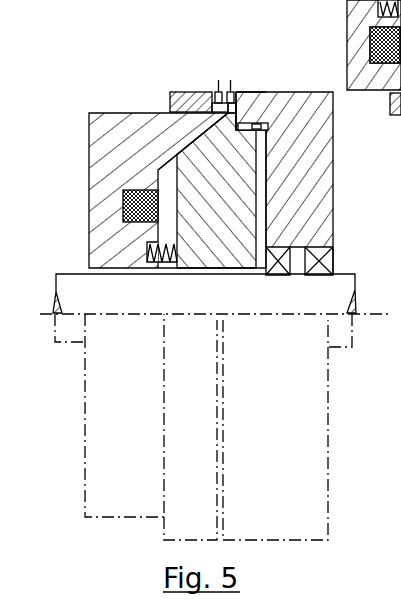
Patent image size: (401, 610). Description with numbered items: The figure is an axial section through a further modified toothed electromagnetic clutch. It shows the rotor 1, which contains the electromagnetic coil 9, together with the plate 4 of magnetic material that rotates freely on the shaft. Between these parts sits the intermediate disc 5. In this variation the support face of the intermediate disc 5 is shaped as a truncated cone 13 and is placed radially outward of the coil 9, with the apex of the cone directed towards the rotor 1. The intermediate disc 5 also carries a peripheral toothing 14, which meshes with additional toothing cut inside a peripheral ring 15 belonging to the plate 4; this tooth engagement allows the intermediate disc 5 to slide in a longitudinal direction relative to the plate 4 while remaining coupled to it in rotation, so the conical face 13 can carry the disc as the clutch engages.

The rotor 1 is at (130, 150).
The truncated cone support face 13 is at (188, 139).
The peripheral toothing 14 is at (252, 124).
The peripheral ring 15 is at (293, 117).
The plate 4 is at (310, 145).
The intermediate disc 5 is at (243, 176).
The electromagnetic coil 9 is at (122, 208).